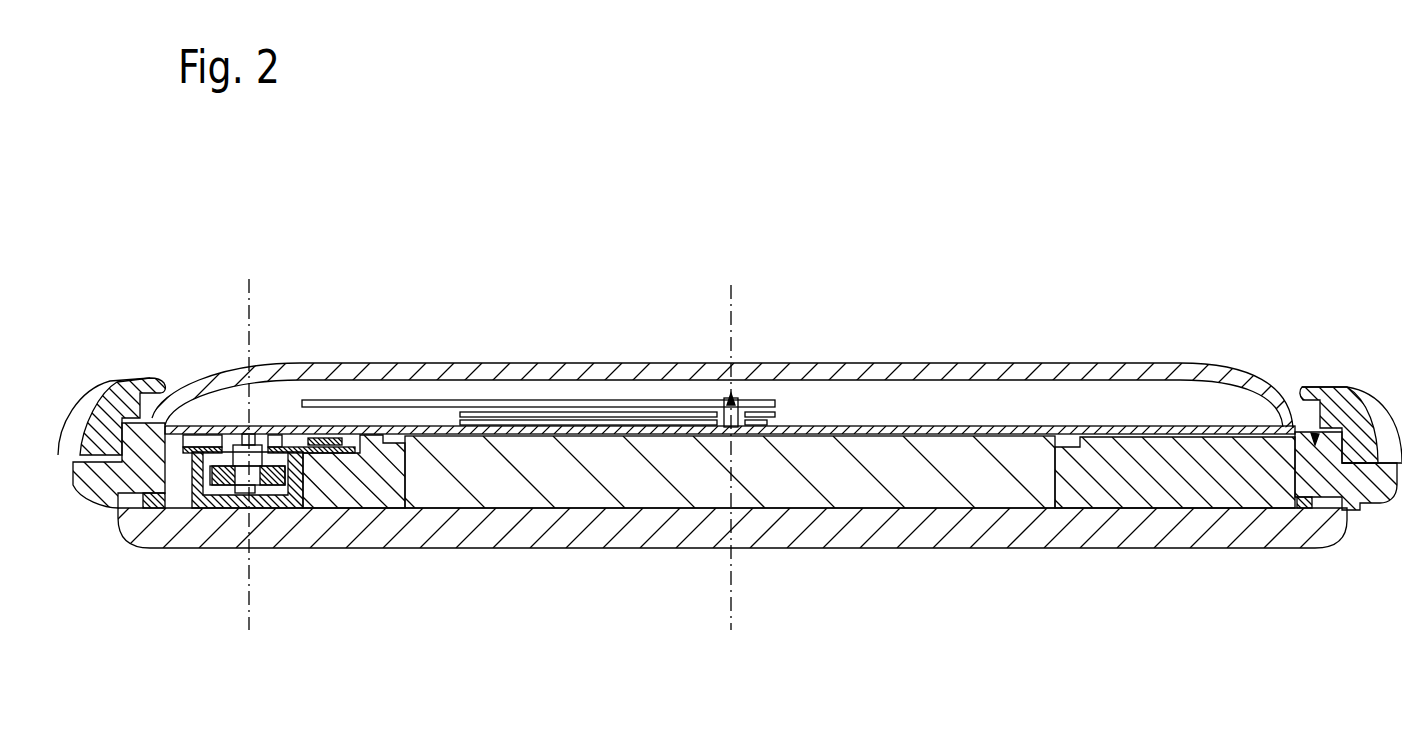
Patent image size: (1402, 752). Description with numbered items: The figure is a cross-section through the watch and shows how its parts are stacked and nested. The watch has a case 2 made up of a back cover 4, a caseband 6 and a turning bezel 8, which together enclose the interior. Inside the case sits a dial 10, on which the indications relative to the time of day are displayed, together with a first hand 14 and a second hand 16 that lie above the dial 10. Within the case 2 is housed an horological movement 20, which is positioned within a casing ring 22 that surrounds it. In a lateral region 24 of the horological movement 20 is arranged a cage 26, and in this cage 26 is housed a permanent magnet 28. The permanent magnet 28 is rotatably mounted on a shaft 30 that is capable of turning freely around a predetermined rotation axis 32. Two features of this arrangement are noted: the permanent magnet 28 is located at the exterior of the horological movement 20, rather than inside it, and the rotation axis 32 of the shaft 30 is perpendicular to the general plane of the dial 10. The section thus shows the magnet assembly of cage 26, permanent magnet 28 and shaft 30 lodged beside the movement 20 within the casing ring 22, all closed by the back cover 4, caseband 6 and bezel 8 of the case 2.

The case 2 is at (701, 453).
The back cover 4 is at (943, 540).
The caseband 6 is at (1323, 478).
The turning bezel 8 is at (1340, 386).
The dial 10 is at (942, 427).
The first hand 14 is at (457, 400).
The second hand 16 is at (597, 412).
The horological movement 20 is at (652, 477).
The casing ring 22 is at (380, 483).
The lateral region 24 is at (226, 410).
The cage 26 is at (272, 410).
The permanent magnet 28 is at (200, 508).
The shaft 30 is at (292, 500).
The rotation axis 32 is at (250, 305).